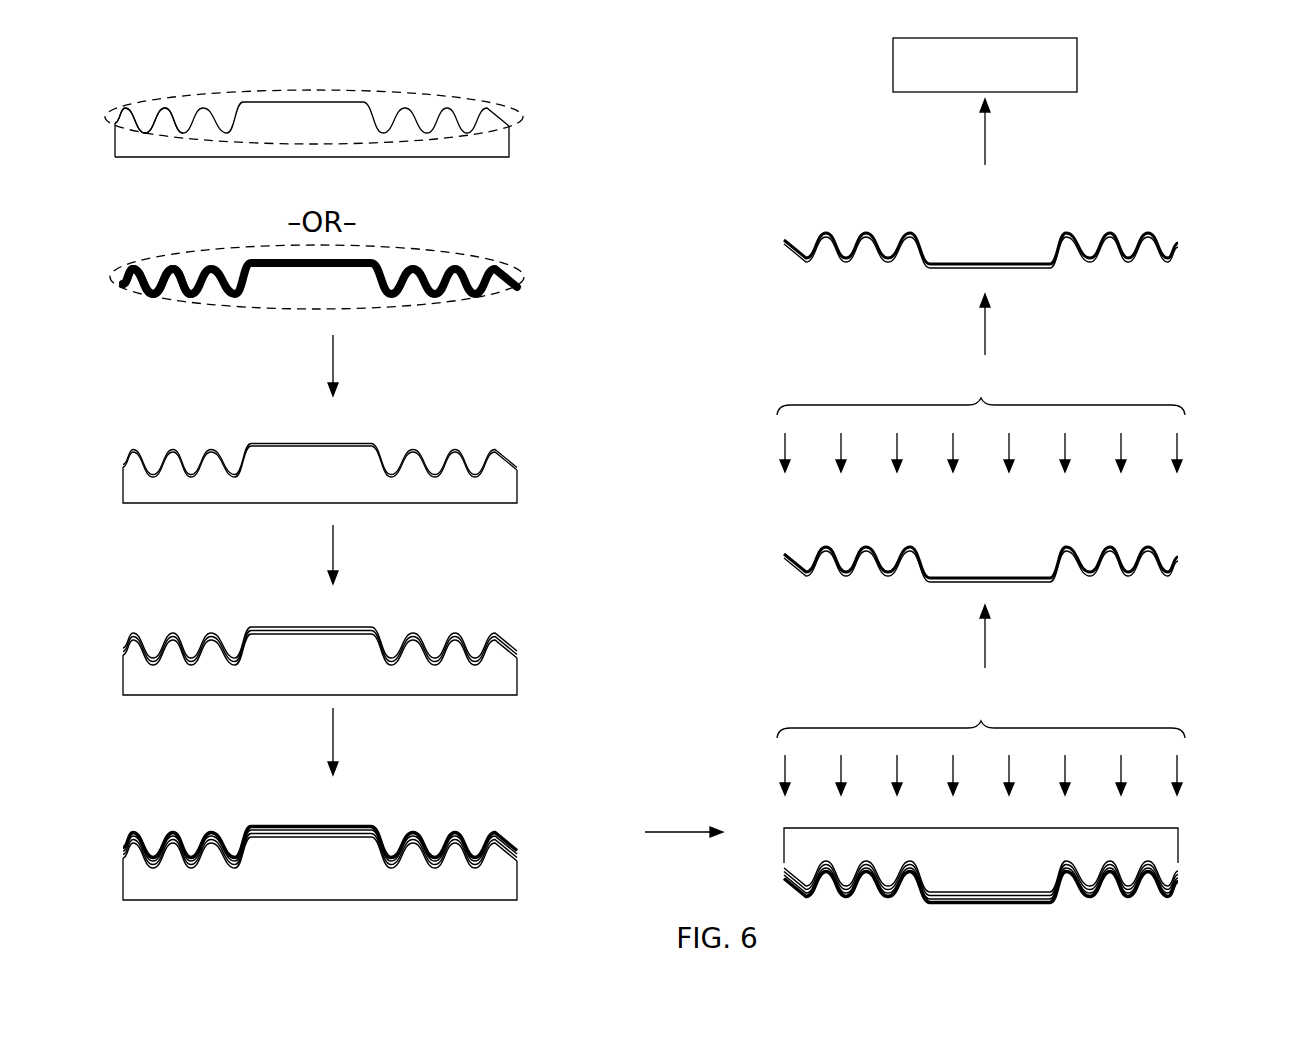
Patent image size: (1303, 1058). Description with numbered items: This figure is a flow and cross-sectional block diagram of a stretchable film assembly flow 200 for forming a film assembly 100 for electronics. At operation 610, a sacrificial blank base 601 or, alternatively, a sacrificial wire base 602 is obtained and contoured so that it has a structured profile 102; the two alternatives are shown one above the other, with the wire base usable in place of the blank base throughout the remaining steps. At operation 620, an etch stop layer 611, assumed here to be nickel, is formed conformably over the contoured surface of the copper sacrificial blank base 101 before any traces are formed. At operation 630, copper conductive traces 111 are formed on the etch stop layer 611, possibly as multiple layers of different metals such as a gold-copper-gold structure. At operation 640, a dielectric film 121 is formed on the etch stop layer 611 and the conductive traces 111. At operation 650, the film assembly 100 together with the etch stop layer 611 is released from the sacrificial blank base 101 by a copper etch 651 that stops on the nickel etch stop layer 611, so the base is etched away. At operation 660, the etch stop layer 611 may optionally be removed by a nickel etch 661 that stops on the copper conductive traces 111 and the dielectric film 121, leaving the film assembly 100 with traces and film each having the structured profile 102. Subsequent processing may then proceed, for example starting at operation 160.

The stretchable film assembly flow 200 is at (118, 60).
The operation 610 is at (553, 64).
The sacrificial blank base 601 is at (512, 148).
The sacrificial wire base 602 is at (522, 284).
The structured profile 102 is at (163, 134).
The operation 620 is at (553, 362).
The etch stop layer 611 is at (512, 456).
The sacrificial blank base 101 is at (518, 494).
The operation 630 is at (553, 607).
The conductive traces 111 is at (1012, 259).
The operation 640 is at (553, 798).
The dielectric film 121 is at (341, 836).
The operation 650 is at (1193, 681).
The copper etch 651 is at (981, 745).
The operation 660 is at (1198, 518).
The nickel etch 661 is at (981, 422).
The film assembly 100 is at (1181, 204).
The operation 160 is at (985, 65).